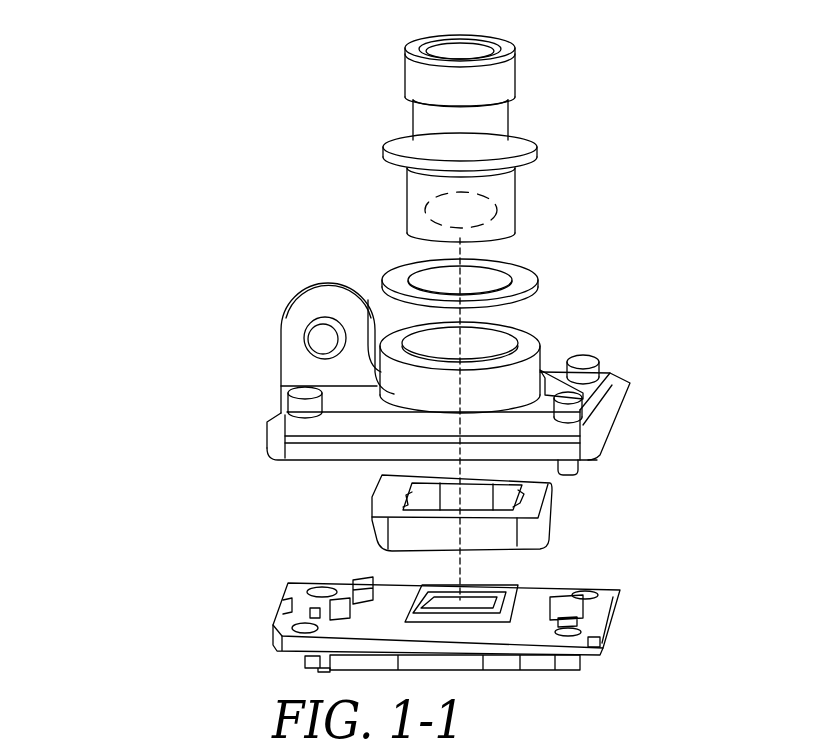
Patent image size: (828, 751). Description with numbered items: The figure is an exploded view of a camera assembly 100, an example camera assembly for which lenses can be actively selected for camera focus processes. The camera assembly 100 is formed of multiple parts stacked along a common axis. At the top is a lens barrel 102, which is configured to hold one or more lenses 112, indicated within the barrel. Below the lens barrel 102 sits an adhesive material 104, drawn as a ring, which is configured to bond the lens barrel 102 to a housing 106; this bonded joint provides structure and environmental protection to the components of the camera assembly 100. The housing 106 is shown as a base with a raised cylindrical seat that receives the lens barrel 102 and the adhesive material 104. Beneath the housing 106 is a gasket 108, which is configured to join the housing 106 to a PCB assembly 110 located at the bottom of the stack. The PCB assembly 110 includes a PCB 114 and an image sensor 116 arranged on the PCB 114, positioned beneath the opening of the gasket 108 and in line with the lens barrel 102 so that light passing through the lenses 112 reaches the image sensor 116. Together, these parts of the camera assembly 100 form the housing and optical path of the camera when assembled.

The camera assembly 100 is at (146, 102).
The lens barrel 102 is at (405, 76).
The adhesive material 104 is at (388, 275).
The housing 106 is at (293, 308).
The gasket 108 is at (373, 522).
The PCB assembly 110 is at (270, 570).
The lenses 112 is at (498, 212).
The PCB 114 is at (600, 622).
The image sensor 116 is at (517, 595).